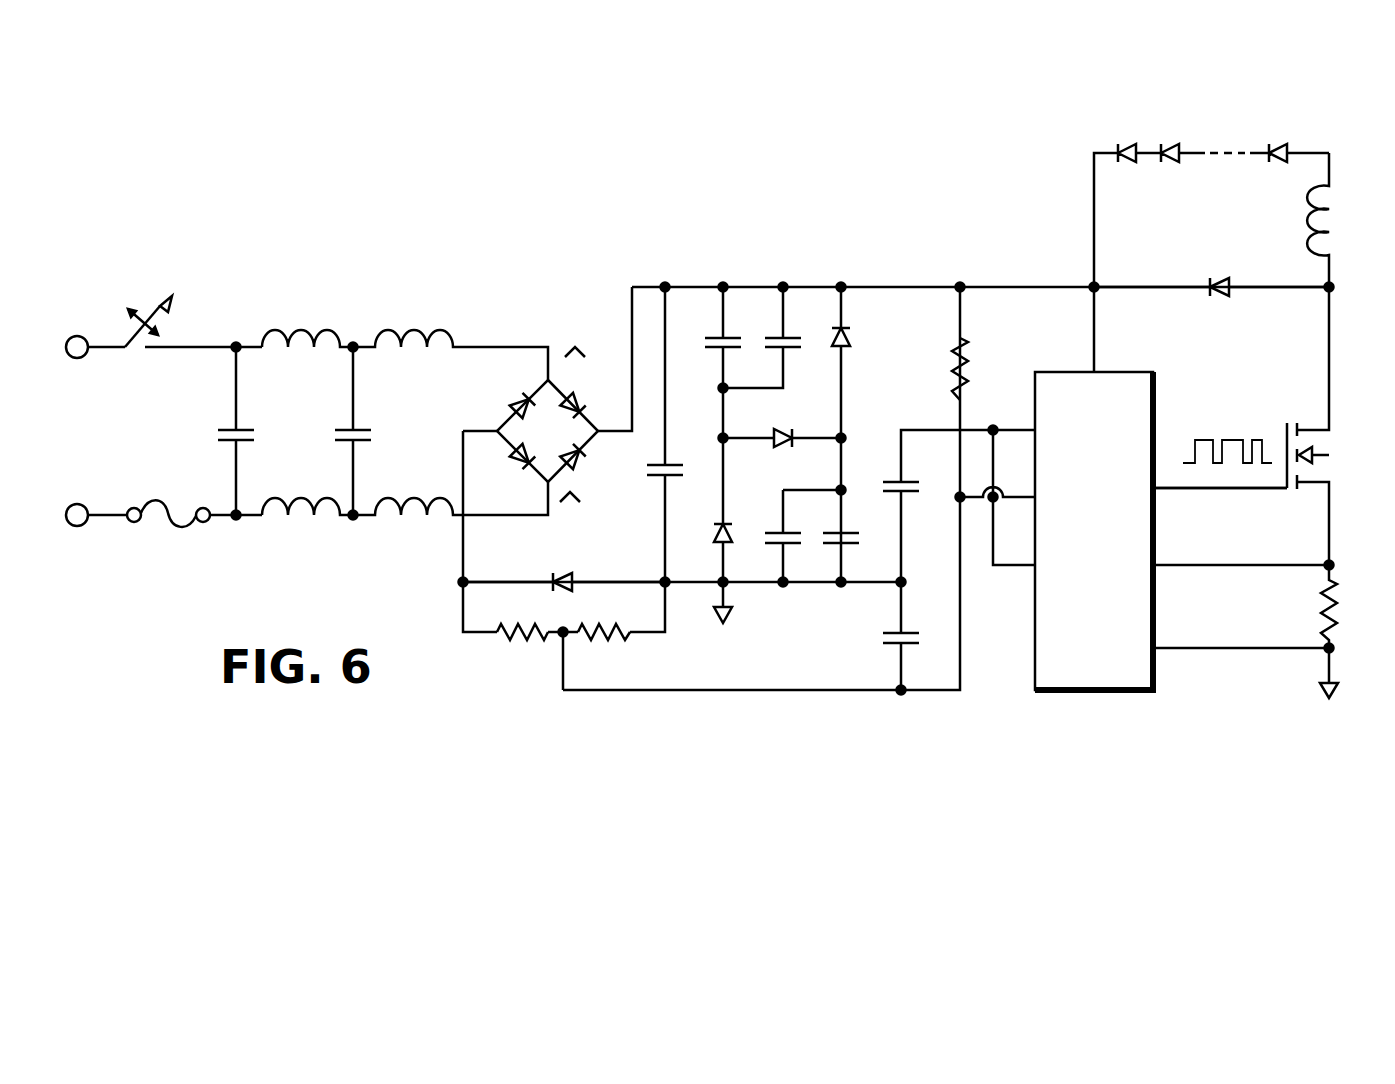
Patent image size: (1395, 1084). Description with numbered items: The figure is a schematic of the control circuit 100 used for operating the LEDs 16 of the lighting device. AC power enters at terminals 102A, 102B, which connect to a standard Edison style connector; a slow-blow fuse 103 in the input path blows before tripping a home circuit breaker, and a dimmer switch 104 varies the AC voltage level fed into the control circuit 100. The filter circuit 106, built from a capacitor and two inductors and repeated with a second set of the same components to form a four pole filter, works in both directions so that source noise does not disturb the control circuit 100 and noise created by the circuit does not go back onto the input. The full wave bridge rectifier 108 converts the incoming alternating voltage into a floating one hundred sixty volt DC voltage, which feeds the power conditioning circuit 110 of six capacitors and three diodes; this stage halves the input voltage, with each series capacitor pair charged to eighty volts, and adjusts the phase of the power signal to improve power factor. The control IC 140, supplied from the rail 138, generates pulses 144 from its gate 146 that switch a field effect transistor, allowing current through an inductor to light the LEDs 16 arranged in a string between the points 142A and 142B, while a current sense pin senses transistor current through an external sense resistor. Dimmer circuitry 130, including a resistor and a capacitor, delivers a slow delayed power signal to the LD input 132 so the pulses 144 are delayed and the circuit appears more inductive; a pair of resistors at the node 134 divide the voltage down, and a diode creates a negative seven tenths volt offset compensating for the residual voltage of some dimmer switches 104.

The control circuit 100 is at (462, 154).
The terminal 102A is at (79, 336).
The terminal 102B is at (79, 504).
The slow-blow fuse 103 is at (180, 530).
The dimmer switch 104 is at (161, 298).
The filter circuit 106 is at (488, 262).
The full wave bridge rectifier 108 is at (585, 477).
The power conditioning circuit 110 is at (884, 262).
The dimmer circuitry 130 is at (741, 524).
The Light Dimming (LD) input 132 is at (991, 626).
The node 134 is at (458, 582).
The supply rail 138 is at (1030, 286).
The control Integrated Circuit (IC) 140 is at (1125, 694).
The LED string first end 142A is at (1090, 155).
The LED string second end 142B is at (1330, 150).
The pulses 144 is at (1200, 438).
The gate 146 is at (1166, 496).
The LEDs 16 is at (1278, 142).